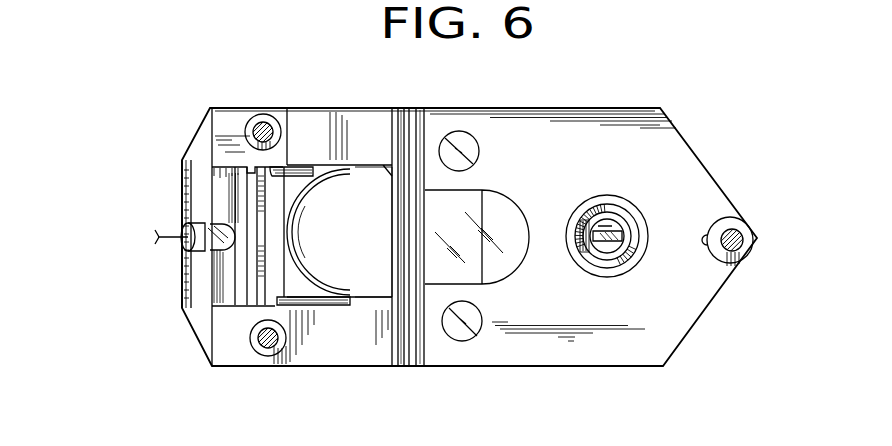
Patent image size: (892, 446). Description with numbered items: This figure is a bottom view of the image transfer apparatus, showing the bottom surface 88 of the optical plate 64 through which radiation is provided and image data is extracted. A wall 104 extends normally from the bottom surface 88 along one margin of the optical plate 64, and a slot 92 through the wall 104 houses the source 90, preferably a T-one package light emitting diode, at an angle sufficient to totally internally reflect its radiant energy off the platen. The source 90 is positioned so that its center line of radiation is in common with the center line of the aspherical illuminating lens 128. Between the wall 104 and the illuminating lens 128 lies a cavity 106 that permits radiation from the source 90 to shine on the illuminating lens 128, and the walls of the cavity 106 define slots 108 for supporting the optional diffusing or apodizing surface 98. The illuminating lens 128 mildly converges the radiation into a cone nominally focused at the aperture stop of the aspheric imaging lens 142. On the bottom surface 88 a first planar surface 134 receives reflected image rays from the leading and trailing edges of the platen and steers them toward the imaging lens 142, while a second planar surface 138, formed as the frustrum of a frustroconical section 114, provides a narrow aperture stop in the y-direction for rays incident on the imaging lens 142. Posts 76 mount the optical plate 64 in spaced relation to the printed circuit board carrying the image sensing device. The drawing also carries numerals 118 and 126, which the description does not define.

The optical plate 64 is at (673, 160).
The posts 76 is at (250, 118).
The bottom surface 88 is at (580, 352).
The source 90 is at (223, 217).
The slot 92 is at (220, 243).
The diffusing or apodizing surface 98 is at (258, 238).
The wall 104 is at (208, 283).
The cavity 106 is at (228, 178).
The slots 108 is at (283, 175).
The frustroconical section 114 is at (630, 212).
The screw head 118 is at (272, 123).
The partition 126 is at (410, 348).
The illuminating lens 128 is at (365, 198).
The first planar surface 134 is at (502, 212).
The second planar surface 138 is at (593, 255).
The imaging lens 142 is at (608, 247).